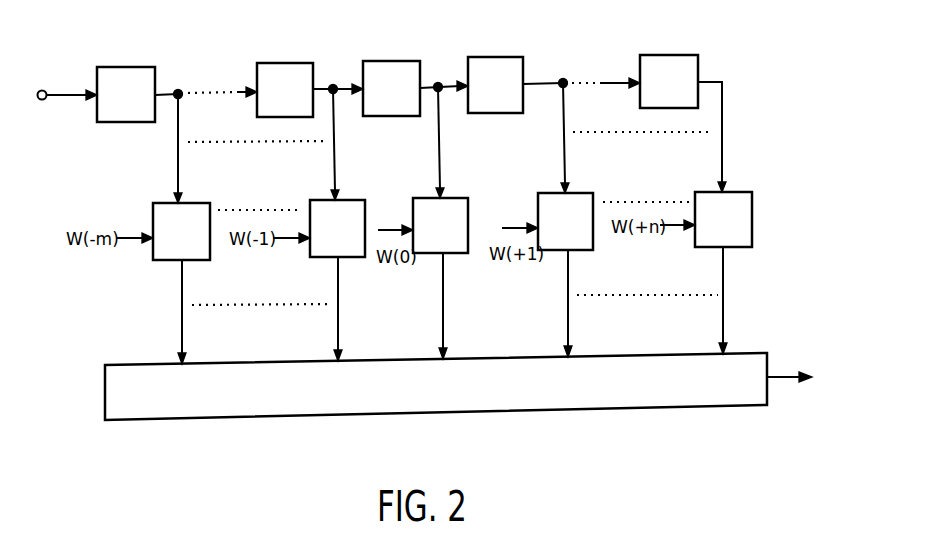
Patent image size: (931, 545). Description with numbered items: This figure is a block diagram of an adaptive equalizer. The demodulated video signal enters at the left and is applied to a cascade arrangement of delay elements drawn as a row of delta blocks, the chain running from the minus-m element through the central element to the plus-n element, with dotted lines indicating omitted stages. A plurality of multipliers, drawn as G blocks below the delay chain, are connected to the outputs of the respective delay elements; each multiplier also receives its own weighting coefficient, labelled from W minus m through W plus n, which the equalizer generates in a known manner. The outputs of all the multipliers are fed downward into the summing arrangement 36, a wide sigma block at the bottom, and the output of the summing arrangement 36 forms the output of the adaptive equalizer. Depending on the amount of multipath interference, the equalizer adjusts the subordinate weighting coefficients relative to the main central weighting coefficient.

The summing arrangement 36 is at (113, 365).